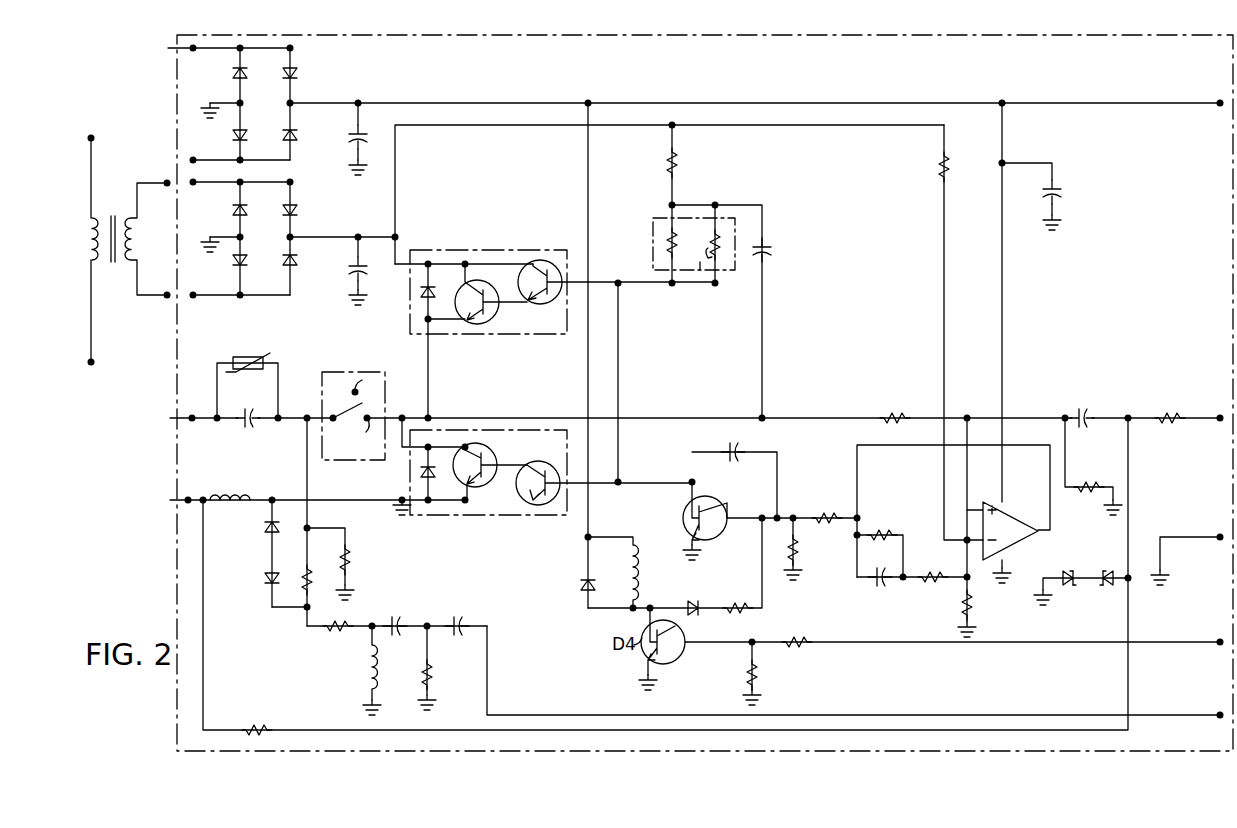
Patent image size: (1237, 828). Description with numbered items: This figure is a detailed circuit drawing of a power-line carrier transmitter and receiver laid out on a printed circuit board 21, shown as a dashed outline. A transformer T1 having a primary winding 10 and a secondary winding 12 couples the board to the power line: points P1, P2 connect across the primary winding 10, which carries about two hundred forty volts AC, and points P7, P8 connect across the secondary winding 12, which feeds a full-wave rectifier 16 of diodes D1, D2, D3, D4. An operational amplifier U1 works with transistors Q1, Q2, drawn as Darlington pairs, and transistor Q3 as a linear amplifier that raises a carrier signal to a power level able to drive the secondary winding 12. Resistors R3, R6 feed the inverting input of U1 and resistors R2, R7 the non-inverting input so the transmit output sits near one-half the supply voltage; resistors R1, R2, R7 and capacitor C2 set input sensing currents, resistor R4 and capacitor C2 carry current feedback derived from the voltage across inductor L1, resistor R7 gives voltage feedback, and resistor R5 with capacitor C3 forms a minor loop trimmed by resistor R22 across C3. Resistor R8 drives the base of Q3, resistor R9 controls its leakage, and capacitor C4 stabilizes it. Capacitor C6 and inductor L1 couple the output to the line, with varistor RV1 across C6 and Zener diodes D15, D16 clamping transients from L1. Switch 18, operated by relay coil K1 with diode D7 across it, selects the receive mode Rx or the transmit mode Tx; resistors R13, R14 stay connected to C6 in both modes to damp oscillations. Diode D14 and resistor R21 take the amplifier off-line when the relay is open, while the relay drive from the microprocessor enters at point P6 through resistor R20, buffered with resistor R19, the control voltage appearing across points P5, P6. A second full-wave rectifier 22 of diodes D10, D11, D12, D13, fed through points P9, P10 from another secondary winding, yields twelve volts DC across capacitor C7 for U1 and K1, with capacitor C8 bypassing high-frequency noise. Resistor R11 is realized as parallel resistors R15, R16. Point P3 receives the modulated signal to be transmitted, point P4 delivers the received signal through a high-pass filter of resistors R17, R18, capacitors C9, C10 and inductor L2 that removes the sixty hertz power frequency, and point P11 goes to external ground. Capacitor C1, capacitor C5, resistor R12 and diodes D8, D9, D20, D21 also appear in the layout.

The primary winding 10 is at (95, 260).
The secondary winding 12 is at (131, 238).
The full-wave rectifier 16 is at (293, 239).
The switch 18 is at (344, 402).
The printed circuit board 21 is at (177, 575).
The full-wave rectifier 22 is at (268, 104).
The transformer T1 is at (131, 240).
The point P1 is at (180, 418).
The point P2 is at (178, 500).
The point P3 is at (1220, 415).
The point P4 is at (1220, 712).
The point P5 is at (1220, 100).
The point P6 is at (1220, 639).
The point P7 is at (193, 296).
The point P8 is at (192, 181).
The point P9 is at (237, 150).
The point P10 is at (212, 48).
The point P11 is at (1220, 534).
The diode D1 is at (295, 210).
The diode D2 is at (295, 262).
The diode D3 is at (245, 210).
The diode D4 is at (245, 260).
The diode D7 is at (582, 586).
The diode D8 is at (263, 524).
The diode D9 is at (264, 577).
The diode D10 is at (286, 75).
The diode D11 is at (233, 78).
The diode D12 is at (296, 135).
The diode D13 is at (247, 130).
The diode D14 is at (694, 606).
The Zener diode D15 is at (1108, 571).
The Zener diode D16 is at (1070, 588).
The diode D20 is at (420, 292).
The diode D21 is at (420, 474).
The capacitor C1 is at (346, 272).
The capacitor C2 is at (1080, 408).
The capacitor C3 is at (878, 586).
The capacitor C4 is at (724, 456).
The capacitor C5 is at (768, 255).
The capacitor C6 is at (246, 408).
The capacitor C7 is at (376, 135).
The capacitor C8 is at (1062, 202).
The capacitor C9 is at (396, 618).
The capacitor C10 is at (462, 608).
The resistor R1 is at (1166, 408).
The resistor R2 is at (1086, 484).
The resistor R3 is at (962, 612).
The resistor R4 is at (252, 722).
The resistor R5 is at (926, 570).
The resistor R6 is at (940, 168).
The resistor R7 is at (892, 410).
The resistor R8 is at (822, 512).
The resistor R9 is at (798, 550).
The resistor R11 is at (675, 256).
The resistor R12 is at (678, 166).
The resistor R13 is at (349, 552).
The resistor R14 is at (323, 522).
The resistor R15 is at (678, 255).
The resistor R16 is at (704, 256).
The resistor R17 is at (336, 631).
The resistor R18 is at (432, 678).
The resistor R19 is at (756, 674).
The resistor R20 is at (800, 640).
The resistor R21 is at (737, 605).
The resistor R22 is at (882, 528).
The metal oxide varistor RV1 is at (250, 360).
The inductor L1 is at (230, 492).
The inductor L2 is at (368, 672).
The relay coil K1 is at (642, 580).
The transistor Q1 is at (546, 321).
The transistor Q2 is at (532, 482).
The transistor Q3 is at (684, 518).
The operational amplifier U1 is at (1022, 540).
The receive mode Rx is at (370, 375).
The transmit mode Tx is at (366, 435).